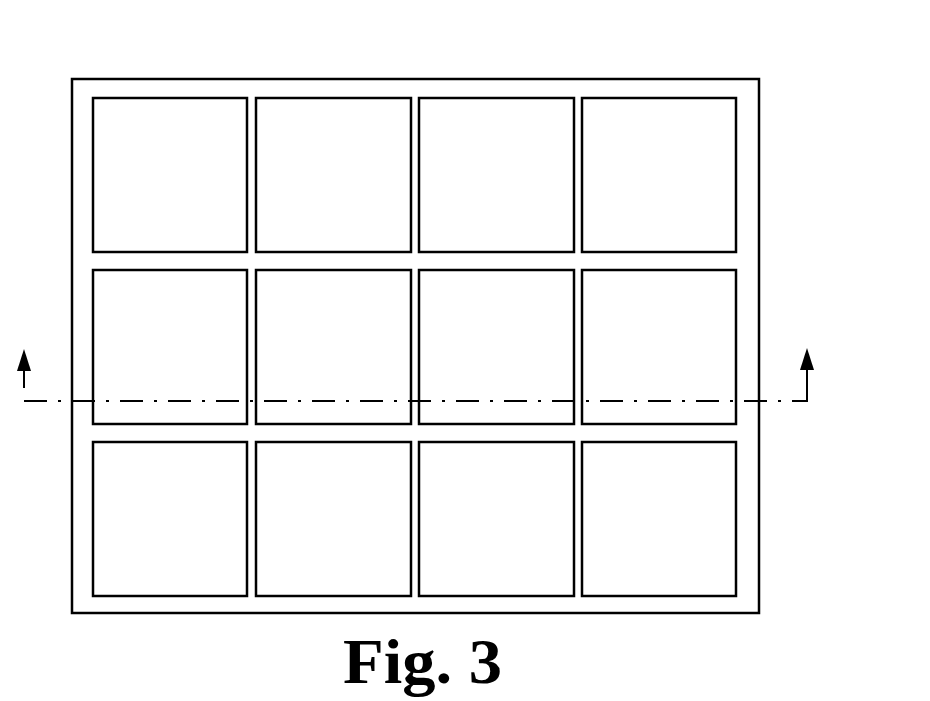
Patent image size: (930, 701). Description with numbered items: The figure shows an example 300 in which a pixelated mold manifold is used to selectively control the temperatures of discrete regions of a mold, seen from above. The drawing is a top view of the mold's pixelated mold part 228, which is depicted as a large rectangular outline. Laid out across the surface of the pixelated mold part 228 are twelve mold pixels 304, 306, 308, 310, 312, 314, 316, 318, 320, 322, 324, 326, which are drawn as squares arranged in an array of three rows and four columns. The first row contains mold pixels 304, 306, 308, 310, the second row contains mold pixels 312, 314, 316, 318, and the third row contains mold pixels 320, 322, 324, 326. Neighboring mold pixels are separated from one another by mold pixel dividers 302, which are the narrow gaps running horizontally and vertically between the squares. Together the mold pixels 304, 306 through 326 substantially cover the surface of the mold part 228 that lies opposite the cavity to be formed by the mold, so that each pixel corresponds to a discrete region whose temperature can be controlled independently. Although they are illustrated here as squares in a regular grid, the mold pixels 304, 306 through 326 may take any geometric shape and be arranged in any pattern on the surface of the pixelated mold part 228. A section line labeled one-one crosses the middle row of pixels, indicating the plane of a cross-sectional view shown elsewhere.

The example 300 is at (97, 21).
The pixelated mold part 228 is at (415, 322).
The mold pixel dividers 302 is at (652, 260).
The mold pixel 304 is at (148, 187).
The mold pixel 306 is at (312, 187).
The mold pixel 308 is at (475, 187).
The mold pixel 310 is at (637, 187).
The mold pixel 312 is at (148, 359).
The mold pixel 314 is at (312, 359).
The mold pixel 316 is at (475, 359).
The mold pixel 318 is at (637, 359).
The mold pixel 320 is at (148, 531).
The mold pixel 322 is at (312, 531).
The mold pixel 324 is at (475, 531).
The mold pixel 326 is at (637, 531).